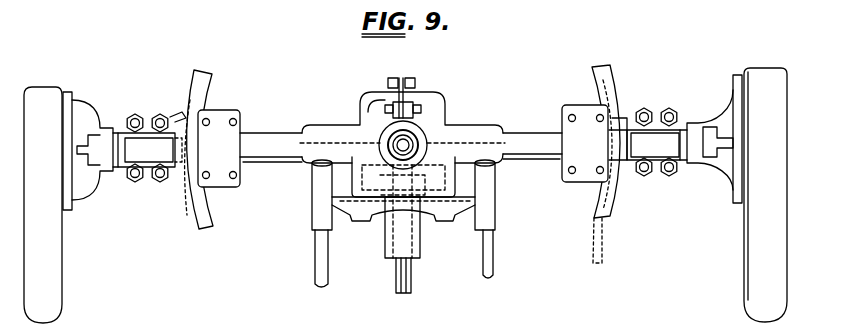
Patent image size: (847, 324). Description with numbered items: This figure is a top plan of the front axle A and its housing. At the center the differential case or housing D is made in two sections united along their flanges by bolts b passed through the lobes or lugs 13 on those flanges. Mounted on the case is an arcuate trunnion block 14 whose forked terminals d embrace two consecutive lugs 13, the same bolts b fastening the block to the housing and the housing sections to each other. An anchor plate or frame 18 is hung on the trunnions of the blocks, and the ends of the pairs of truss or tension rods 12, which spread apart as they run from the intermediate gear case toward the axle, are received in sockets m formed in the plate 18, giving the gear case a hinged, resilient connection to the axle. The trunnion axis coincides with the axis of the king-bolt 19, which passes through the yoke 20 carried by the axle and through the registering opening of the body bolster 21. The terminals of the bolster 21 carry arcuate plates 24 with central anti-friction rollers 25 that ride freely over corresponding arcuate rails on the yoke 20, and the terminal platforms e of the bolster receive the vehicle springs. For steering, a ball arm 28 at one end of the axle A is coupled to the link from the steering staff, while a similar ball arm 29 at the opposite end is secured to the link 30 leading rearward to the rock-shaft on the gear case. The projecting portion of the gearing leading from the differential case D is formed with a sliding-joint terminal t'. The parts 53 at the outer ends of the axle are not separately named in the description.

The wheel 53 is at (70, 92).
The yoke 20 is at (152, 150).
The ball arm 28 is at (173, 116).
The arcuate plates 24 is at (196, 80).
The anti-friction rollers 25 is at (183, 158).
The link 30 is at (607, 233).
The terminal platforms e is at (221, 117).
The ball arm 29 is at (627, 116).
The front axle A is at (272, 132).
The body bolster 21 is at (537, 138).
The front differential case D is at (362, 123).
The arcuate trunnion block 14 is at (383, 115).
The king-bolt 19 is at (412, 143).
The anchor plate 18 is at (447, 187).
The sockets m is at (318, 210).
The tension rods 12 is at (322, 250).
The sliding joint terminal t' is at (412, 239).
The forked terminals d is at (394, 100).
The lugs 13 is at (410, 82).
The bolts b is at (418, 104).